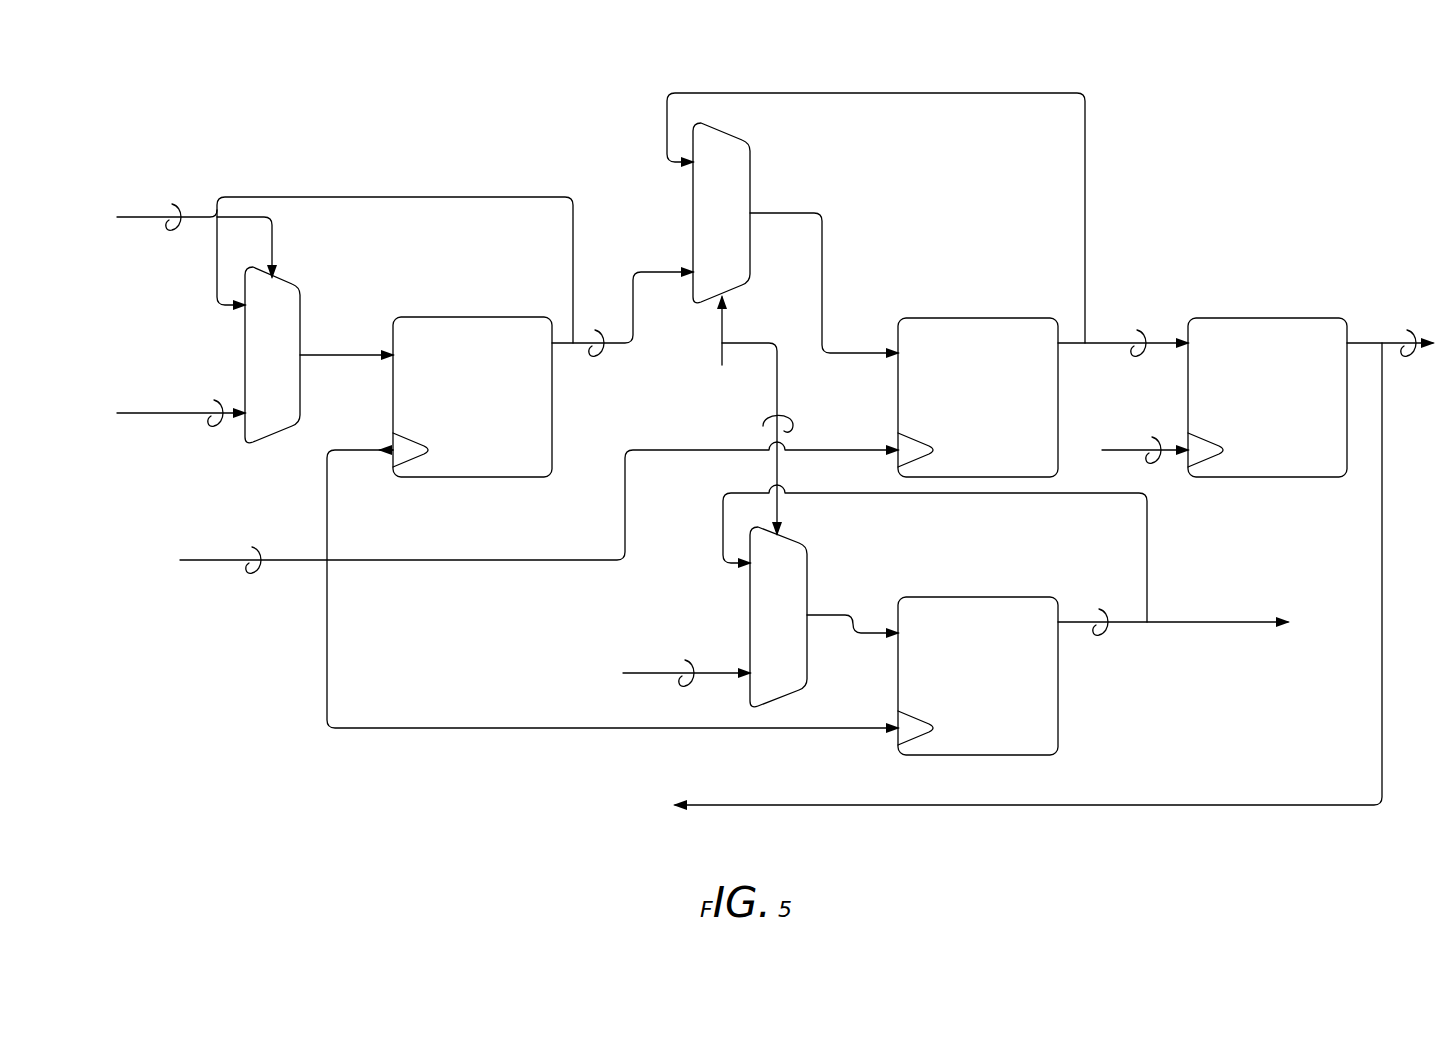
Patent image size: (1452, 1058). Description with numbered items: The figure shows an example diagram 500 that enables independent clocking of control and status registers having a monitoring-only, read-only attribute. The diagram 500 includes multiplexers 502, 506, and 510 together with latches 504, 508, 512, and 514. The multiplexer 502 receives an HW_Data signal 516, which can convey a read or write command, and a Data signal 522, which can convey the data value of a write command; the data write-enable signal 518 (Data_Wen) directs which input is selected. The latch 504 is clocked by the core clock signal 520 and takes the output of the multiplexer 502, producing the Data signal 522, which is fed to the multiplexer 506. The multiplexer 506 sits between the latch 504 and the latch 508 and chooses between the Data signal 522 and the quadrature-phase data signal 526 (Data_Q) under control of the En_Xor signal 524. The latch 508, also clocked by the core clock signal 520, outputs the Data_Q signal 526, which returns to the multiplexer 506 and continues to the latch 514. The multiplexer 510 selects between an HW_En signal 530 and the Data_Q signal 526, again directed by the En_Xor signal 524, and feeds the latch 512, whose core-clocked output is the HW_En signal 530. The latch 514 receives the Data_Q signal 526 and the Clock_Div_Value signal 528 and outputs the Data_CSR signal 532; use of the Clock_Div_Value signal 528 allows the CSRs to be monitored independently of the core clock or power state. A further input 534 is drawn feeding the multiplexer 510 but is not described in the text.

The diagram 500 is at (228, 72).
The multiplexer 502 is at (272, 355).
The latch 504 is at (472, 397).
The multiplexer 506 is at (721, 213).
The latch 508 is at (978, 397).
The multiplexer 510 is at (778, 617).
The latch 512 is at (978, 676).
The latch 514 is at (1267, 397).
The HW_Data signal 516 is at (214, 400).
The data write-enable signal 518 is at (172, 204).
The core clock signal 520 is at (252, 547).
The Data signal 522 is at (595, 356).
The En_Xor signal 524 is at (793, 425).
The quadrature-phase data signal 526 is at (1137, 330).
The Clock_Div_Value signal 528 is at (1152, 463).
The HW_En signal 530 is at (1099, 635).
The Data_CSR signal 532 is at (1407, 330).
The hardware enable input signal 534 is at (685, 660).